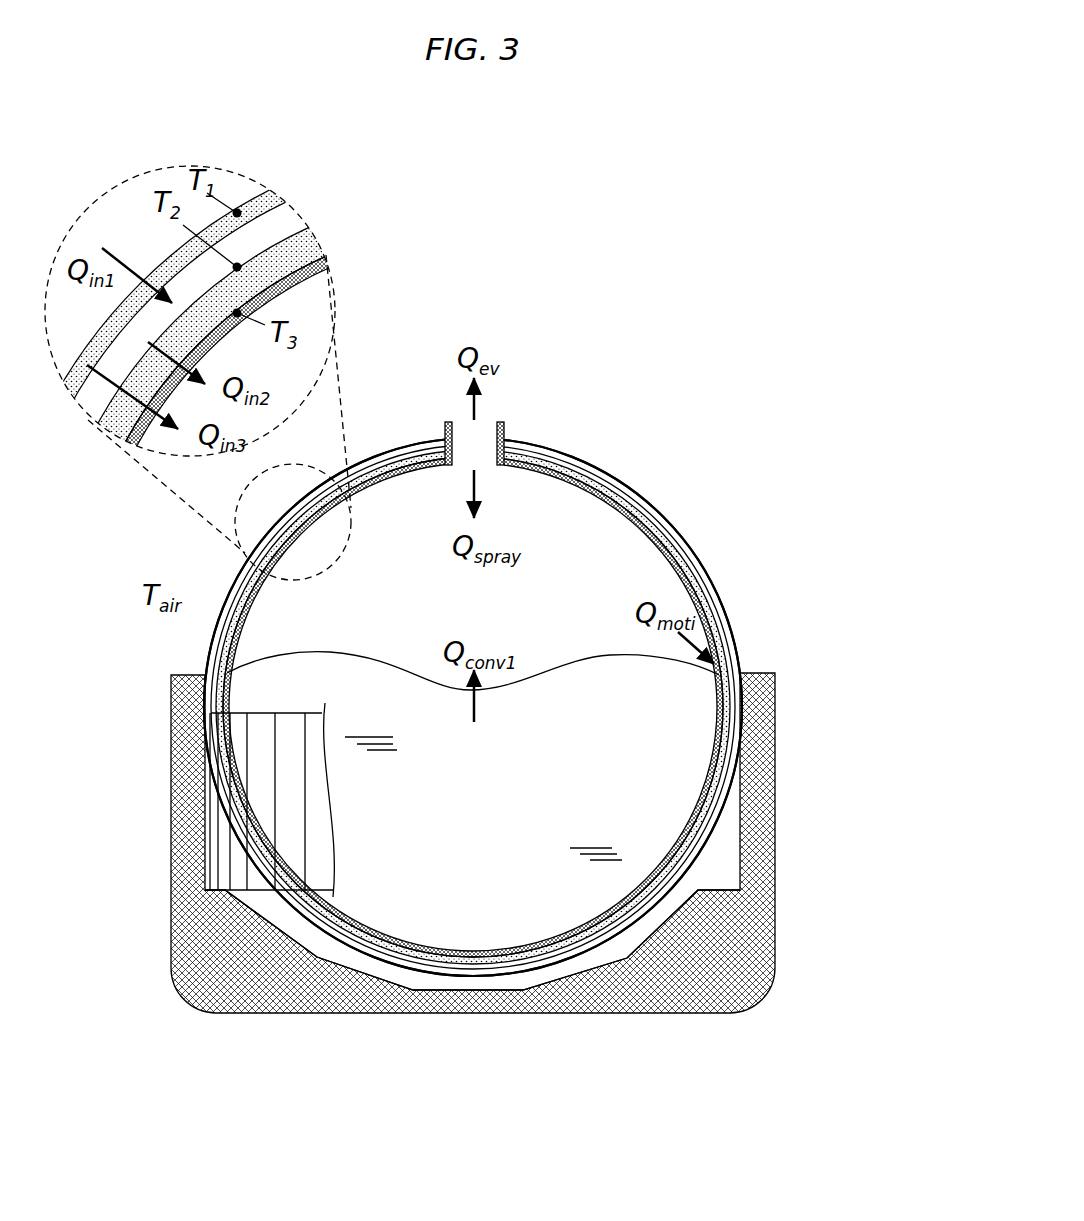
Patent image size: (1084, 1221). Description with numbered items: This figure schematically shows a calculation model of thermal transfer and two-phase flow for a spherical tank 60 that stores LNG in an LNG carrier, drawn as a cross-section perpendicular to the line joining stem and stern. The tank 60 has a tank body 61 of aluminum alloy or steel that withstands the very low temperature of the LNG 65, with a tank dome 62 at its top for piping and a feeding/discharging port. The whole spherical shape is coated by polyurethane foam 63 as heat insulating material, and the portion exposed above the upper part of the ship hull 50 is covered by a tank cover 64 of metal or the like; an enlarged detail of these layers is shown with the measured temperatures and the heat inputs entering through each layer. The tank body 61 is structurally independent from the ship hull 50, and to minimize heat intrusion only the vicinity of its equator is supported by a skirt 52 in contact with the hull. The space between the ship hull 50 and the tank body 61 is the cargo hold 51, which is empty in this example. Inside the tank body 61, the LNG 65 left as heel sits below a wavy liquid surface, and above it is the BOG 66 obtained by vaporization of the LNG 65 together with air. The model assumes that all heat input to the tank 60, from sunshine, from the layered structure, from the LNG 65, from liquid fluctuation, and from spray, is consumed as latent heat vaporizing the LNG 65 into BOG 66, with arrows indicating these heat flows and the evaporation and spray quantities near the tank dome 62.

The ship hull 50 is at (777, 808).
The cargo hold 51 is at (618, 950).
The skirt 52 is at (230, 847).
The tank 60 is at (752, 431).
The tank body 61 is at (723, 618).
The tank dome 62 is at (480, 436).
The polyurethane foam 63 is at (682, 540).
The tank cover 64 is at (653, 488).
The LNG 65 is at (448, 920).
The BOG 66 is at (552, 523).